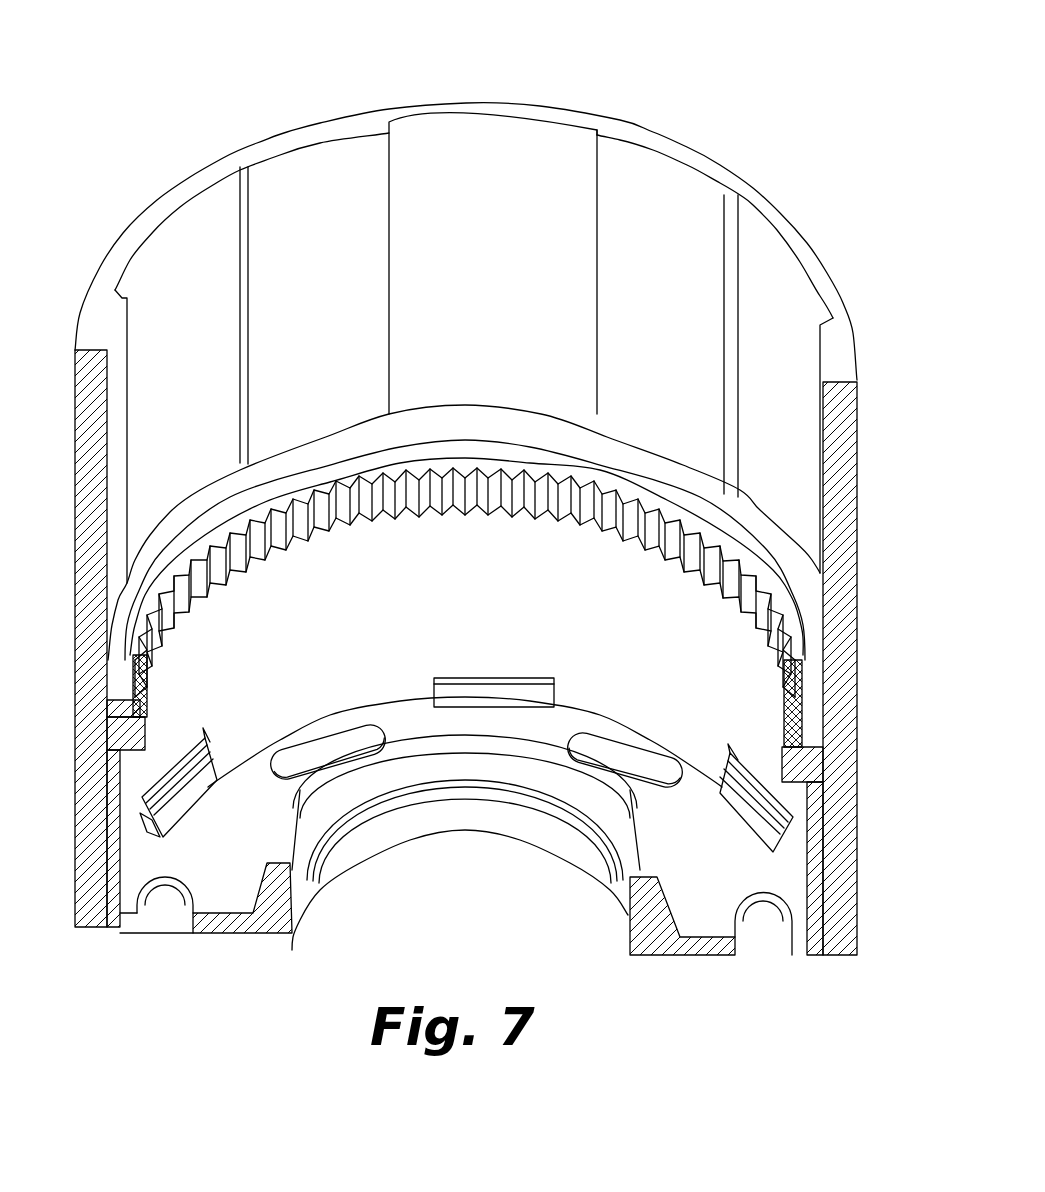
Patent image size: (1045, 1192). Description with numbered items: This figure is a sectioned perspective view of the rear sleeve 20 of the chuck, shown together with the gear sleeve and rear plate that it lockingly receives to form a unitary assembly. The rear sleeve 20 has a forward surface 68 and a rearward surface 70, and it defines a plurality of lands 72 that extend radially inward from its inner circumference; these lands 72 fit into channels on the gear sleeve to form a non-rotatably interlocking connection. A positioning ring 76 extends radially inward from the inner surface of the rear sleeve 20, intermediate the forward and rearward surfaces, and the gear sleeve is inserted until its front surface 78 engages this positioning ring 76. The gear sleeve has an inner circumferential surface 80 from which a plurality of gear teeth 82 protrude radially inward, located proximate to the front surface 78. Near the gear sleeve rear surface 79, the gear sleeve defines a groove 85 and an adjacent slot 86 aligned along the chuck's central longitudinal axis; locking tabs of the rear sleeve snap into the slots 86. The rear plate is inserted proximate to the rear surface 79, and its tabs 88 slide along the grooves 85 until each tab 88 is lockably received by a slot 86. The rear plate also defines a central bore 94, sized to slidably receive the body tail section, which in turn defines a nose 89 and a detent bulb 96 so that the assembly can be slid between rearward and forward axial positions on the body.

The rear sleeve 20 is at (860, 500).
The forward surface 68 is at (483, 104).
The rearward surface 70 is at (88, 927).
The lands 72 is at (116, 357).
The positioning ring 76 is at (200, 512).
The front surface 78 is at (452, 466).
The rear surface 79 is at (118, 933).
The inner circumferential surface 80 is at (470, 586).
The gear teeth 82 is at (265, 545).
The groove 85 is at (150, 838).
The slot 86 is at (180, 757).
The tabs 88 is at (512, 692).
The nose 89 is at (422, 745).
The central bore 94 is at (513, 820).
The detent bulb 96 is at (393, 808).